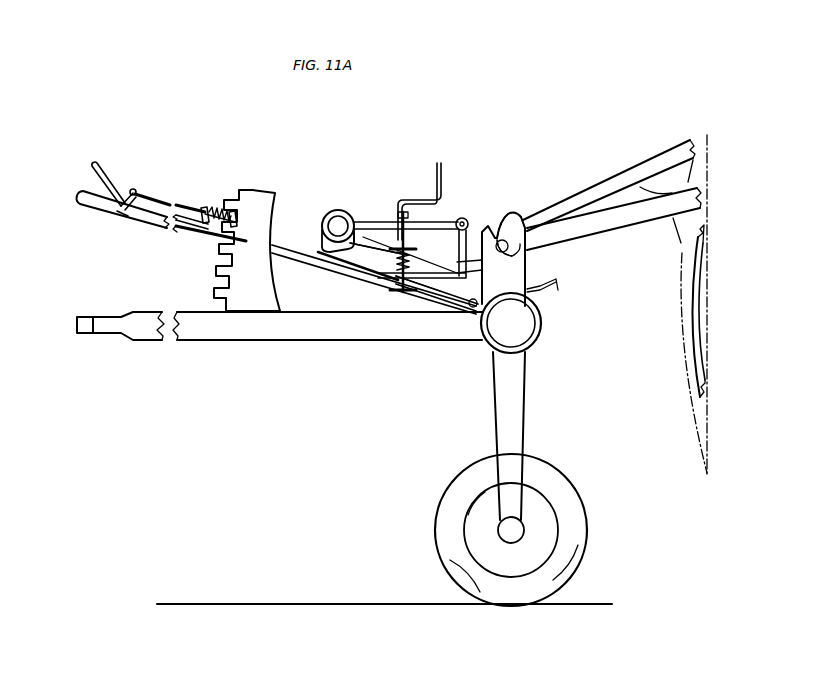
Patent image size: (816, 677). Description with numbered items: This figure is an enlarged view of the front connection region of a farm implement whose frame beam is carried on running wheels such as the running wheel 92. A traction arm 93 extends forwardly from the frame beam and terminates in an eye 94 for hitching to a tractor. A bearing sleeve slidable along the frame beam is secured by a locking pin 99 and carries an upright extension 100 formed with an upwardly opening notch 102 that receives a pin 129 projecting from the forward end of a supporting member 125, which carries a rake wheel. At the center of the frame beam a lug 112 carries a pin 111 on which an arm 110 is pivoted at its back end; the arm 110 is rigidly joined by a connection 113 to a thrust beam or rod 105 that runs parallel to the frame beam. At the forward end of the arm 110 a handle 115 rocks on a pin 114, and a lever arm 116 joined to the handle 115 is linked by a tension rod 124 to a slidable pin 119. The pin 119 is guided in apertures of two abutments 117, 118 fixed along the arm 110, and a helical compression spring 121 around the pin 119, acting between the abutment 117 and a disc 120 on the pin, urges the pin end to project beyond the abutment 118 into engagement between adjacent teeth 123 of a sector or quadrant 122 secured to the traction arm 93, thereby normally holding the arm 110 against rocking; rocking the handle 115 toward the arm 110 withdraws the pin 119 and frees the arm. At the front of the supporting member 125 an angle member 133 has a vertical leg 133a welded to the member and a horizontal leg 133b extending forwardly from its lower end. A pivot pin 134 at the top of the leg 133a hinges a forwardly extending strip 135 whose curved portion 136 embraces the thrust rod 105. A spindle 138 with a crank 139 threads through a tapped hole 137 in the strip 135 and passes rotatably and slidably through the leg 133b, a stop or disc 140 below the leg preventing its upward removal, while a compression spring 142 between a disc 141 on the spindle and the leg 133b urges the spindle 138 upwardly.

The running wheel 92 is at (458, 486).
The traction arm 93 is at (202, 338).
The eye 94 is at (93, 316).
The locking pin 99 is at (557, 285).
The upright extension 100 is at (530, 262).
The upwardly opening notch 102 is at (512, 215).
The thrust beam or rod 105 is at (330, 212).
The arm 110 is at (152, 220).
The pin 111 is at (478, 312).
The lug 112 is at (495, 345).
The connection 113 is at (310, 248).
The pin 114 is at (126, 207).
The handle 115 is at (92, 170).
The lever arm 116 is at (135, 189).
The abutment 117 is at (186, 225).
The abutment 118 is at (218, 239).
The slidable pin 119 is at (204, 206).
The disc 120 is at (233, 210).
The helical compression spring 121 is at (224, 208).
The sector or quadrant 122 is at (226, 297).
The teeth 123 is at (222, 268).
The tension rod 124 is at (175, 191).
The supporting member 125 is at (632, 220).
The pin 129 is at (514, 256).
The angle member 133 is at (446, 300).
The vertical leg 133a is at (499, 240).
The horizontal leg 133b is at (414, 286).
The pivot pin 134 is at (463, 217).
The strip 135 is at (355, 218).
The curved portion 136 is at (324, 254).
The tapped hole 137 is at (395, 246).
The spindle 138 is at (402, 214).
The crank 139 is at (438, 168).
The stop or disc 140 is at (397, 291).
The disc 141 is at (415, 240).
The compression spring 142 is at (356, 268).